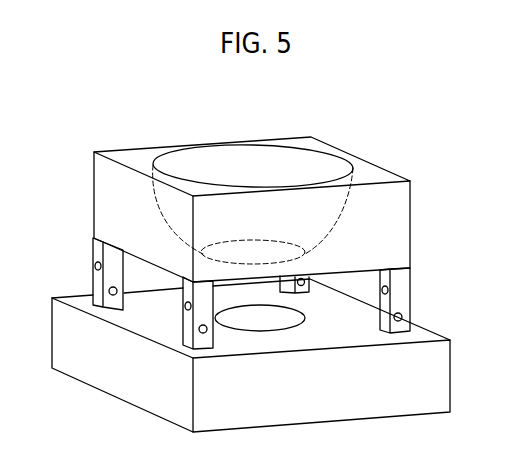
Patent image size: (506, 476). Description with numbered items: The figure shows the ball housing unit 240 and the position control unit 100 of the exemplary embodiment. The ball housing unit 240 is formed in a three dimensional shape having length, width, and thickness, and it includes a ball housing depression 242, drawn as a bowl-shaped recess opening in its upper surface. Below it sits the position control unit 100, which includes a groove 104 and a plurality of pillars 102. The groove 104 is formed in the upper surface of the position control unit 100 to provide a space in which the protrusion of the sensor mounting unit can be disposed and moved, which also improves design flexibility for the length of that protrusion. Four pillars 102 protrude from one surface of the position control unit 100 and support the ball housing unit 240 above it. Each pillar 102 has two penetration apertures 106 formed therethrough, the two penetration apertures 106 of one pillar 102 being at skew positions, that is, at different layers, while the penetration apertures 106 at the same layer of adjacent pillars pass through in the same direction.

The position control unit 100 is at (447, 380).
The pillar 102 is at (98, 285).
The groove 104 is at (262, 324).
The penetration aperture 106 is at (95, 264).
The ball housing unit 240 is at (402, 216).
The ball housing depression 242 is at (246, 159).